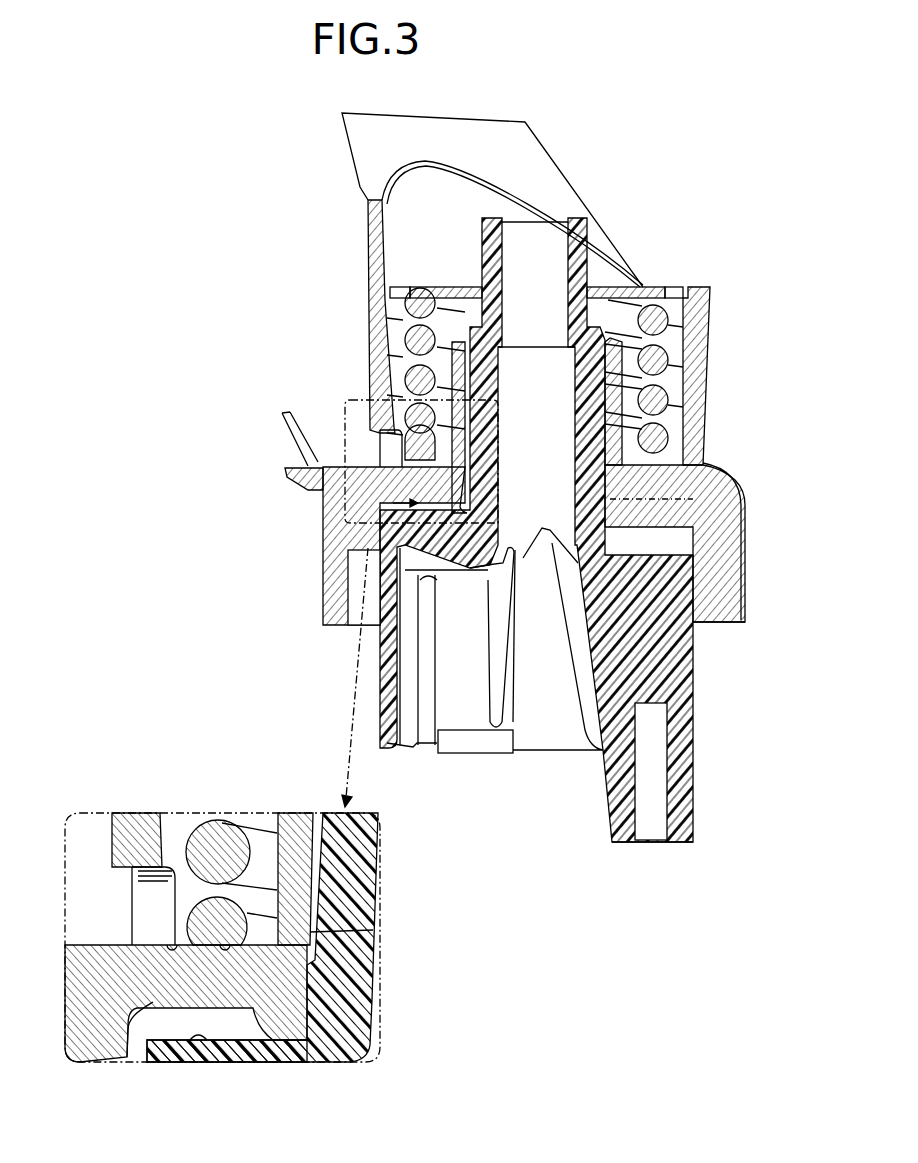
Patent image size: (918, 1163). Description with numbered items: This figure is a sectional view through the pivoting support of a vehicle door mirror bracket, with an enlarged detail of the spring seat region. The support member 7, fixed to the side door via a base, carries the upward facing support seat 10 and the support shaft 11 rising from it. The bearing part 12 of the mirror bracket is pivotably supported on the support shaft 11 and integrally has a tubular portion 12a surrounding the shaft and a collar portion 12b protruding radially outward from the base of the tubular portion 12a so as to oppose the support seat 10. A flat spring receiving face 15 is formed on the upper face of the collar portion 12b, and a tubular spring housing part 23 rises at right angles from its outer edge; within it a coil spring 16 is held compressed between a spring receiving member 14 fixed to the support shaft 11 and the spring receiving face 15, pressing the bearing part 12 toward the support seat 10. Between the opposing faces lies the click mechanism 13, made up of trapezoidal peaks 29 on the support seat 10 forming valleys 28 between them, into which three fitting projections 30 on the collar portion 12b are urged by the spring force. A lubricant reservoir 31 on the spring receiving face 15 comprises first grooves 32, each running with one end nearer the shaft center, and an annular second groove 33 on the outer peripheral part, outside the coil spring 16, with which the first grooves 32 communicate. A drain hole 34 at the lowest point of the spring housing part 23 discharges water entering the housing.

The support member 7 is at (700, 680).
The support seat 10 is at (693, 535).
The support shaft 11 is at (583, 223).
The bearing part 12 is at (628, 460).
The tubular portion 12a is at (665, 357).
The collar portion 12b is at (397, 480).
The click mechanism 13 is at (323, 513).
The spring receiving member 14 is at (643, 287).
The spring receiving face 15 is at (465, 453).
The coil spring 16 is at (420, 303).
The spring housing part 23 is at (367, 300).
The valleys 28 is at (620, 520).
The trapezoidal peaks 29 is at (687, 498).
The fitting projections 30 is at (693, 625).
The lubricant reservoir 31 is at (203, 935).
The first groove 32 is at (373, 930).
The second groove 33 is at (140, 945).
The drain hole 34 is at (380, 433).